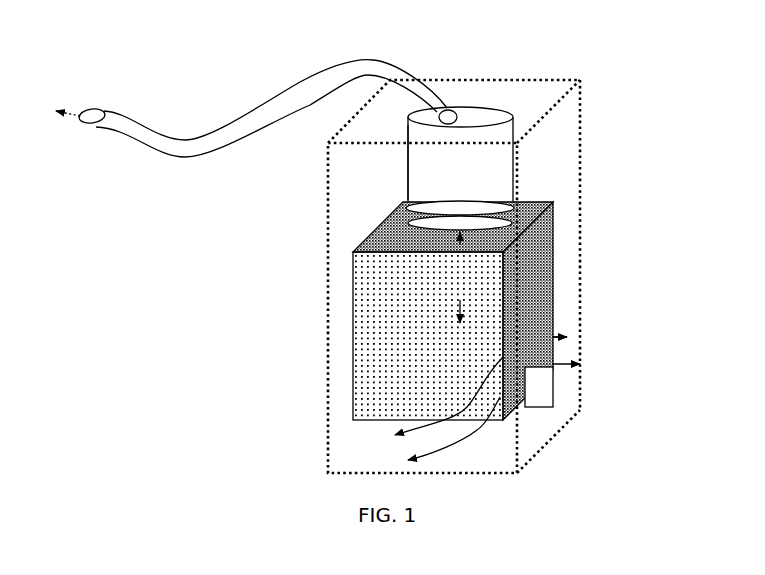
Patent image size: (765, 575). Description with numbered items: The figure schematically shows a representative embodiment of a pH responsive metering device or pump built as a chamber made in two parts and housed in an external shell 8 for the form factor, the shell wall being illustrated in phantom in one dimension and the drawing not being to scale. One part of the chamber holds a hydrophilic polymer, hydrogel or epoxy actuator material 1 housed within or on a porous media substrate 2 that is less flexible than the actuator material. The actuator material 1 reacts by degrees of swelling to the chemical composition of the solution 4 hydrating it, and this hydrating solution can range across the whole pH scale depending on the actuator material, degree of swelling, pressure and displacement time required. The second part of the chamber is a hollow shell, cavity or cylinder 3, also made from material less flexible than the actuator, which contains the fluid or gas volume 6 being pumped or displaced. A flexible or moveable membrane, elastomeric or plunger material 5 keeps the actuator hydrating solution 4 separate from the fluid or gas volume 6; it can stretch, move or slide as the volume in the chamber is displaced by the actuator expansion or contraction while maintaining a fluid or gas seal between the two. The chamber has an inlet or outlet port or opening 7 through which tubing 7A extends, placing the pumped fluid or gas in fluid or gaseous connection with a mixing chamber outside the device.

The actuator material 1 is at (417, 285).
The porous media substrate 2 is at (403, 382).
The hollow shell, cavity or cylinder 3 is at (405, 160).
The solution 4 is at (552, 372).
The flexible or moveable membrane, elastomeric or plunger material 5 is at (465, 205).
The fluid or gas volume 6 is at (460, 154).
The inlet or outlet port or opening 7 is at (449, 110).
The tubing 7A is at (170, 163).
The external shell 8 is at (580, 36).